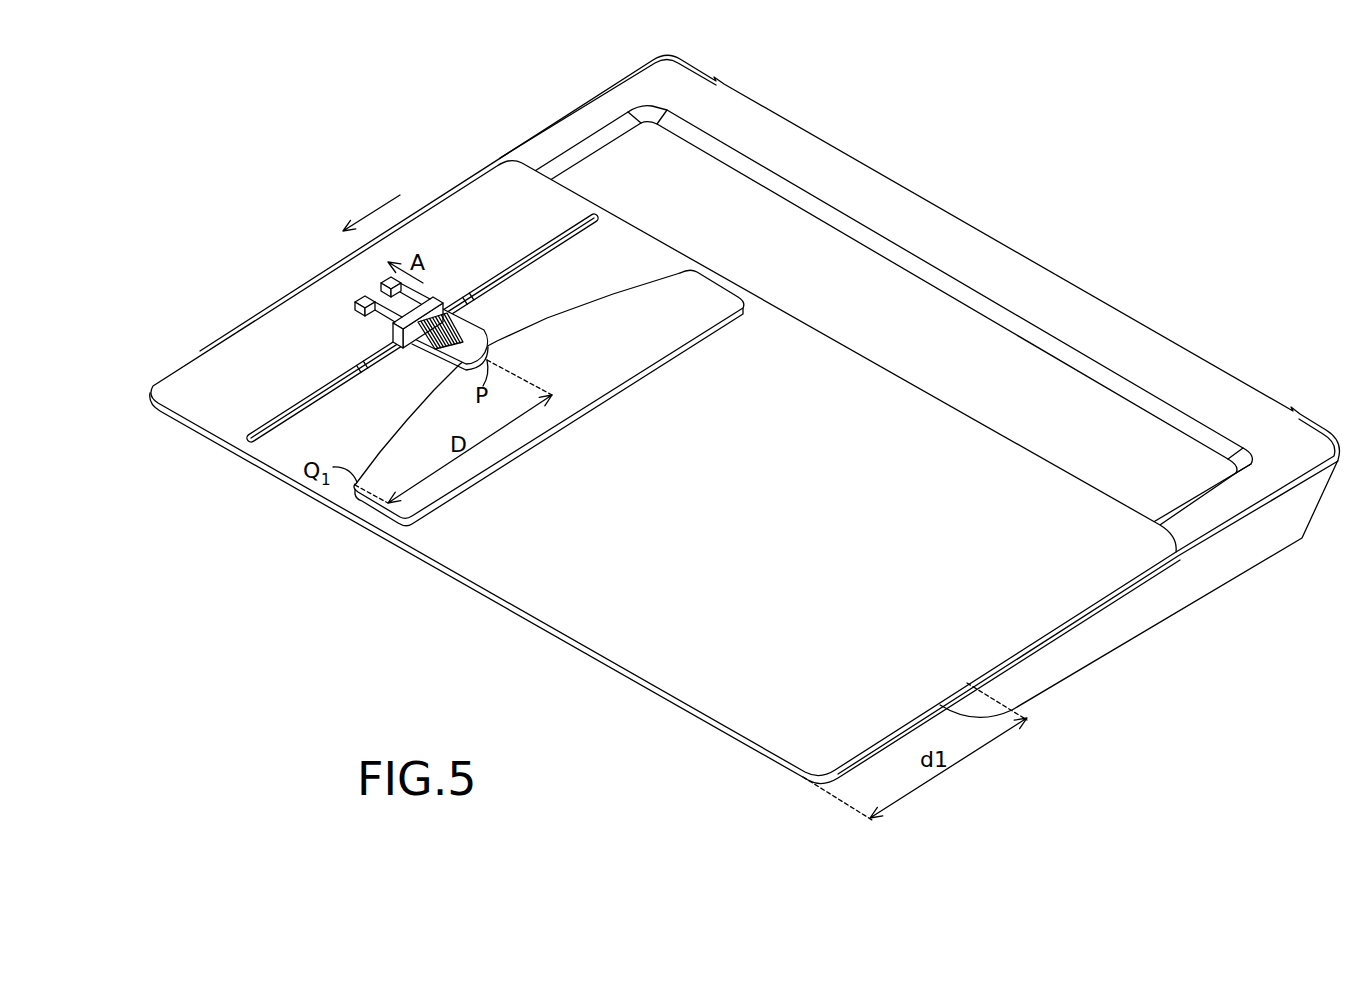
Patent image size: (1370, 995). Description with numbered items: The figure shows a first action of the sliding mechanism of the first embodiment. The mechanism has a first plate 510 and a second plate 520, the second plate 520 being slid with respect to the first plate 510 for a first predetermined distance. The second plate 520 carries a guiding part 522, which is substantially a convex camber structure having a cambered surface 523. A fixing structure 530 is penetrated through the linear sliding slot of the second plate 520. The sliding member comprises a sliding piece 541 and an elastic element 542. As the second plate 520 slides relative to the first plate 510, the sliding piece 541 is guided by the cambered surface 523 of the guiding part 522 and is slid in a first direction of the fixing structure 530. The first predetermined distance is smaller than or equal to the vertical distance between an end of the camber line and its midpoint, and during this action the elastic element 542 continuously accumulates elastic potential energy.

The first plate 510 is at (1057, 303).
The second plate 520 is at (465, 565).
The guiding part 522 is at (536, 398).
The cambered surface 523 is at (377, 462).
The fixing structure 530 is at (397, 348).
The sliding piece 541 is at (473, 342).
The elastic element 542 is at (462, 292).